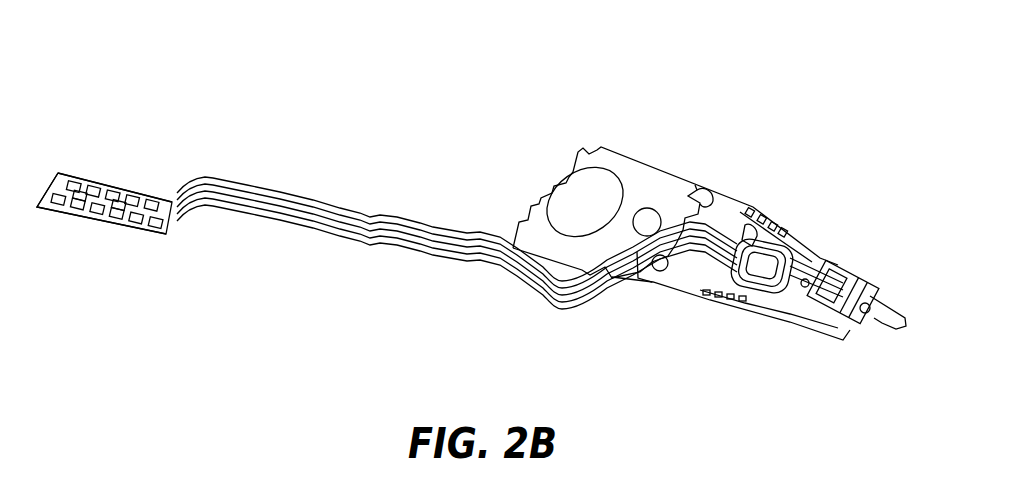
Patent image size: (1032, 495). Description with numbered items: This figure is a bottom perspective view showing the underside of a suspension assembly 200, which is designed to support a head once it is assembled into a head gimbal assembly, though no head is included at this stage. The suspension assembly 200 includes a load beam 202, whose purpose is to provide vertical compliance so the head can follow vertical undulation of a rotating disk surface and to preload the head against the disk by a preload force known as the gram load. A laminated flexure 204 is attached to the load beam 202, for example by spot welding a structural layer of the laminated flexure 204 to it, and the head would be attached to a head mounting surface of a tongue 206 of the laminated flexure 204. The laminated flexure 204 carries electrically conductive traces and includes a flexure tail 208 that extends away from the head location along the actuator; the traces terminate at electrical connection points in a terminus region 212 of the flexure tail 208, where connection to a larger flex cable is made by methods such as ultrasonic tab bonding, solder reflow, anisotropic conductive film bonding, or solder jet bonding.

The suspension assembly 200 is at (843, 73).
The load beam 202 is at (717, 202).
The laminated flexure 204 is at (764, 310).
The tongue 206 is at (843, 270).
The flexure tail 208 is at (315, 199).
The terminus region 212 is at (94, 227).